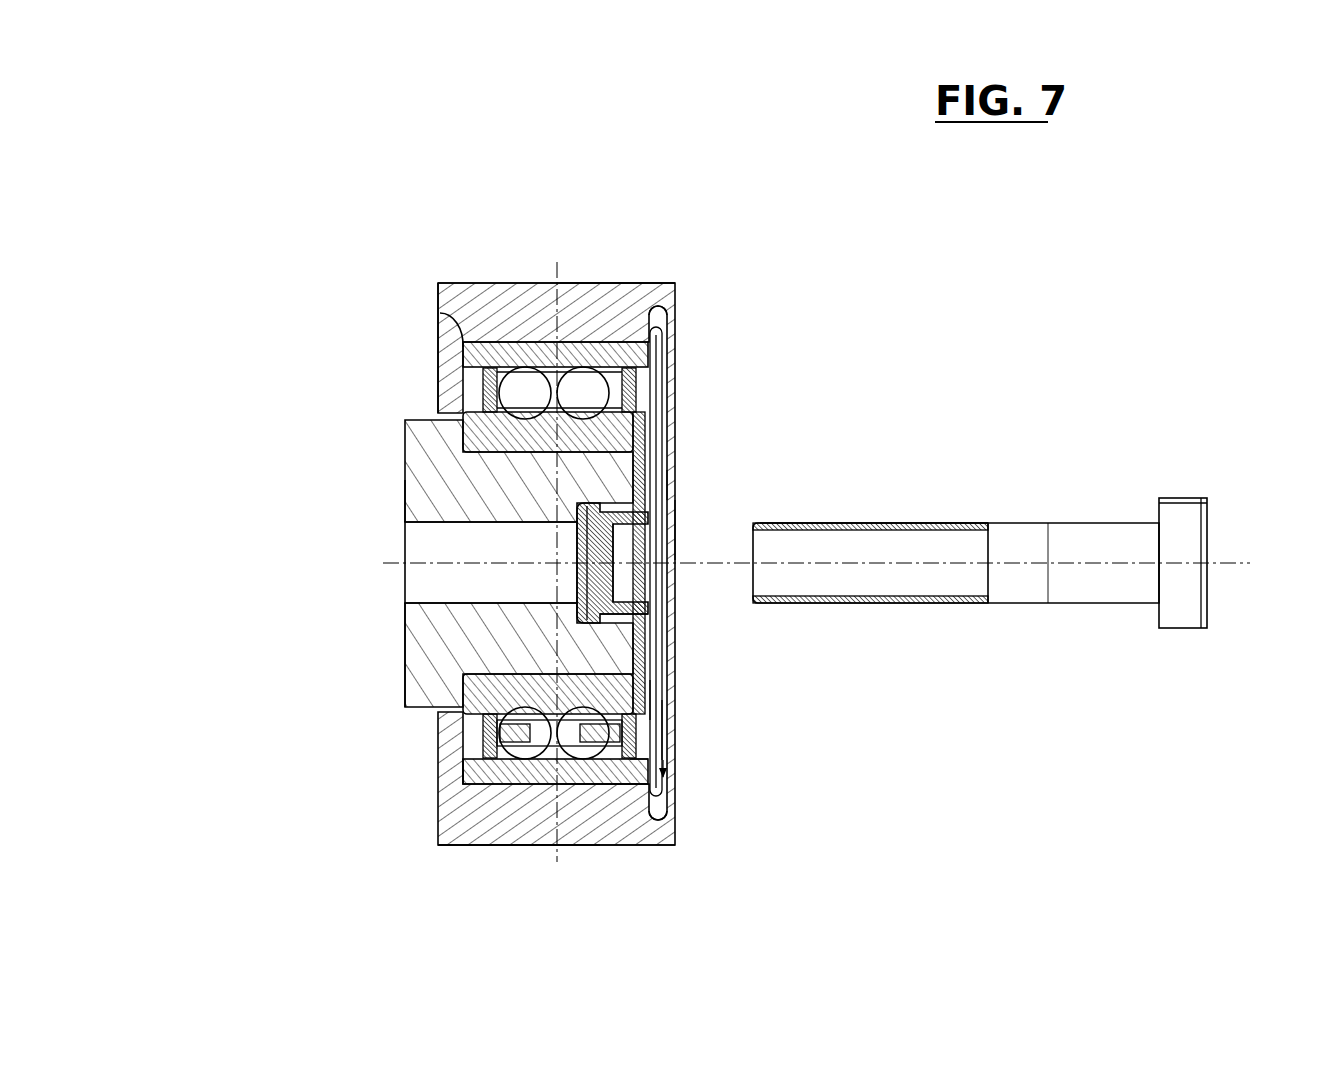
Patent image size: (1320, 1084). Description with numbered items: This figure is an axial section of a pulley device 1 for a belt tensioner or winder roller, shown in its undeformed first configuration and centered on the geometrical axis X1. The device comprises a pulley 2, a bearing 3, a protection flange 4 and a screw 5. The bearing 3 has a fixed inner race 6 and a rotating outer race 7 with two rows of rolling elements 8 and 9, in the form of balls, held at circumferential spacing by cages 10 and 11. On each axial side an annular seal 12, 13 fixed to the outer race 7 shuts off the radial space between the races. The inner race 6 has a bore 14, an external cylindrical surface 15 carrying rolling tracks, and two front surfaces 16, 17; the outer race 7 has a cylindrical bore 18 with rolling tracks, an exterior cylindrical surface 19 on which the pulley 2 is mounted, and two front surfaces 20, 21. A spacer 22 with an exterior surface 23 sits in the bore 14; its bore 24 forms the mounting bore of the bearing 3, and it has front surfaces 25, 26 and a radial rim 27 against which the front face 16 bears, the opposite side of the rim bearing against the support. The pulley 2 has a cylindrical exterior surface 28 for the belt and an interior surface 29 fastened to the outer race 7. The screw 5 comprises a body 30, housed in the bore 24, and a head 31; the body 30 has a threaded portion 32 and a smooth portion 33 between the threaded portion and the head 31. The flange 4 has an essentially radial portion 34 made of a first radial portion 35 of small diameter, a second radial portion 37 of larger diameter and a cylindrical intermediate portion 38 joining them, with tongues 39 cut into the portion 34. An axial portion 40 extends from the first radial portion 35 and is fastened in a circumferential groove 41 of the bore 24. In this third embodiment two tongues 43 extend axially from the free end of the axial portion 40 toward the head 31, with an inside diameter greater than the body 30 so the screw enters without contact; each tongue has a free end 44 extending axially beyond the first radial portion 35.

The pulley device 1 is at (260, 366).
The pulley 2 is at (458, 281).
The bearing 3 is at (450, 370).
The protection flange 4 is at (676, 790).
The screw 5 is at (980, 542).
The inner race 6 is at (414, 437).
The outer race 7 is at (526, 790).
The rolling elements 8 is at (516, 406).
The rolling elements 9 is at (574, 406).
The cage 10 is at (482, 830).
The cage 11 is at (590, 795).
The annular seal 12 is at (470, 762).
The annular seal 13 is at (648, 792).
The bore 14 is at (495, 476).
The external cylindrical surface 15 is at (500, 745).
The front surface 16 is at (476, 712).
The front surface 17 is at (668, 722).
The cylindrical bore 18 is at (443, 395).
The exterior cylindrical surface 19 is at (515, 333).
The front surface 20 is at (461, 346).
The front surface 21 is at (672, 336).
The spacer 22 is at (403, 657).
The exterior surface 23 is at (420, 705).
The bore 24 is at (440, 551).
The front surface 25 is at (405, 624).
The front surface 26 is at (656, 694).
The radial rim 27 is at (415, 505).
The cylindrical exterior surface 28 is at (535, 848).
The interior surface 29 is at (618, 340).
The body 30 is at (972, 521).
The head 31 is at (1182, 629).
The threaded portion 32 is at (896, 604).
The smooth portion 33 is at (1017, 604).
The essentially radial portion 34 is at (737, 549).
The first radial portion 35 is at (662, 458).
The second radial portion 37 is at (672, 358).
The cylindrical intermediate portion 38 is at (672, 432).
The tongues 39 is at (673, 486).
The axial portion 40 is at (620, 552).
The circumferential groove 41 is at (615, 584).
The tongues 43 is at (676, 527).
The free end 44 is at (653, 610).
The geometrical axis X1 is at (795, 562).